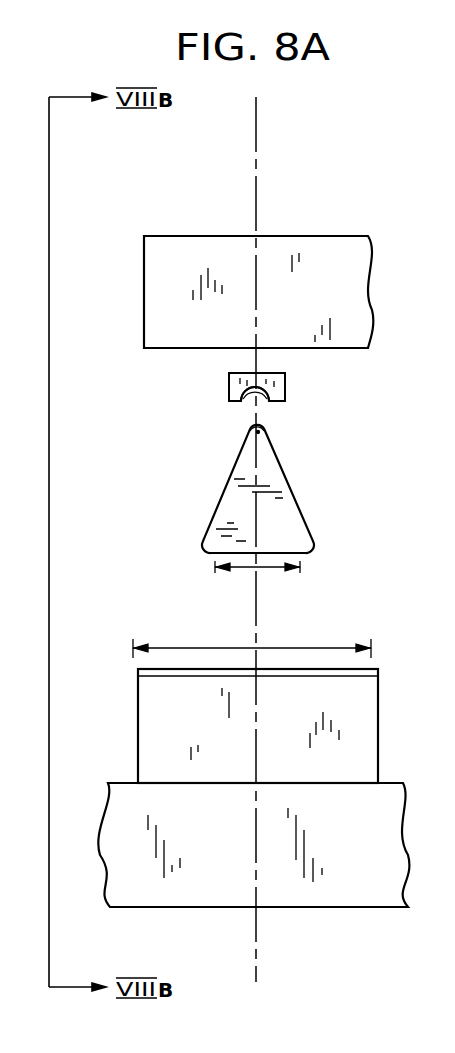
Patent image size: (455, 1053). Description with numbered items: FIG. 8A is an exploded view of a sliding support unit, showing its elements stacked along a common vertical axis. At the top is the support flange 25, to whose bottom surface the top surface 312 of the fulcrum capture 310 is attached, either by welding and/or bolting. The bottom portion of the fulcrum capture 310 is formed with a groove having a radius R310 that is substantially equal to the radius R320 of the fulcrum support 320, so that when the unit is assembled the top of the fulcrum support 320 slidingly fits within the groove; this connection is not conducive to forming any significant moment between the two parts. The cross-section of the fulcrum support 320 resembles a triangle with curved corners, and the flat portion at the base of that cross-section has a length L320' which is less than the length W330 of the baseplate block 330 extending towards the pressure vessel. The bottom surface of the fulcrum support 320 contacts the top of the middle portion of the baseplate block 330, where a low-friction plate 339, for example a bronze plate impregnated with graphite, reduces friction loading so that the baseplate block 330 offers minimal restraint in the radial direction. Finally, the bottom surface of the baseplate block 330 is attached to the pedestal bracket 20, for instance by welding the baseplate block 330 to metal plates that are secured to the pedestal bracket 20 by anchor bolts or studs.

The support flange 25 is at (319, 236).
The top surface 312 is at (270, 373).
The fulcrum capture 310 is at (285, 388).
The radius of the groove R310 is at (259, 394).
The fulcrum support 320 is at (297, 485).
The radius of the fulcrum support R320 is at (258, 432).
The length of the flat base portion L320' is at (257, 581).
The length of the baseplate block W330 is at (252, 638).
The baseplate block 330 is at (138, 709).
The low-friction plate 339 is at (139, 673).
The pedestal bracket 20 is at (115, 797).